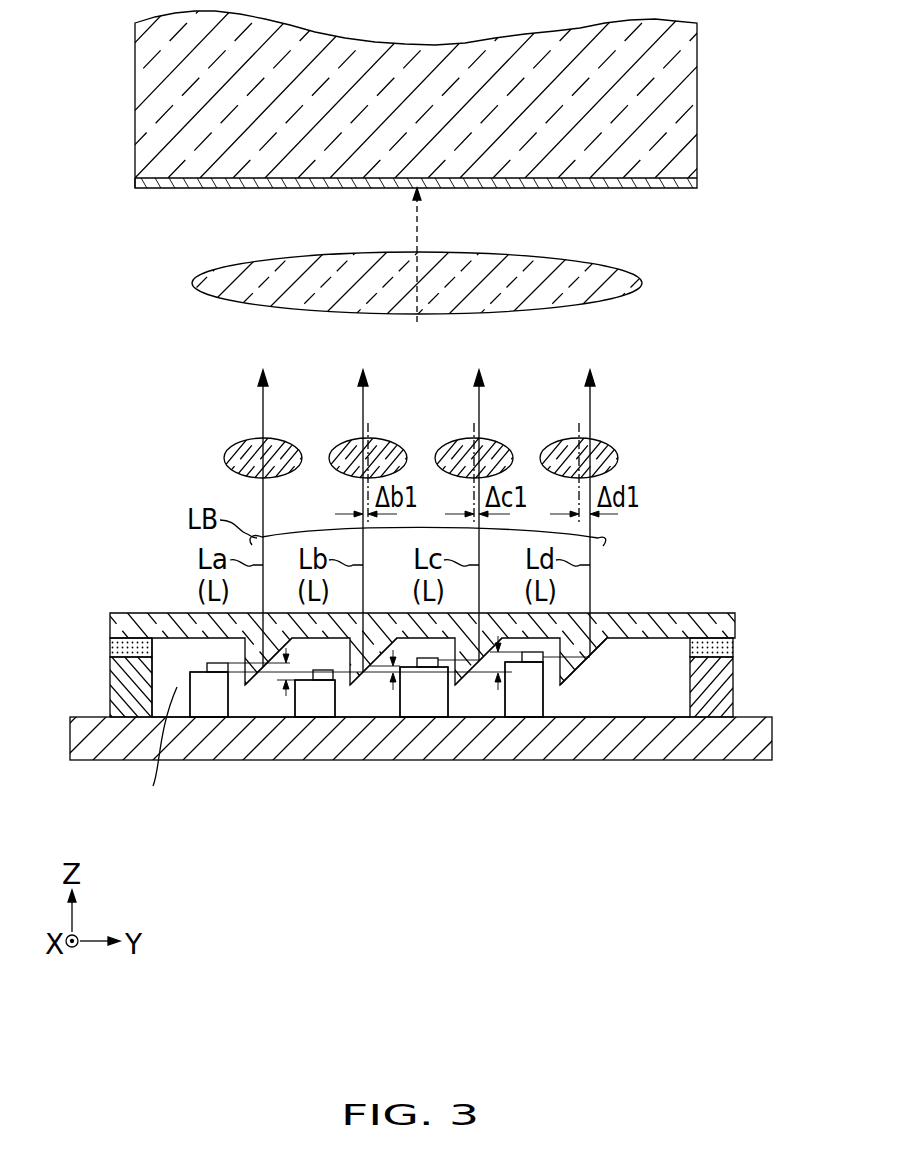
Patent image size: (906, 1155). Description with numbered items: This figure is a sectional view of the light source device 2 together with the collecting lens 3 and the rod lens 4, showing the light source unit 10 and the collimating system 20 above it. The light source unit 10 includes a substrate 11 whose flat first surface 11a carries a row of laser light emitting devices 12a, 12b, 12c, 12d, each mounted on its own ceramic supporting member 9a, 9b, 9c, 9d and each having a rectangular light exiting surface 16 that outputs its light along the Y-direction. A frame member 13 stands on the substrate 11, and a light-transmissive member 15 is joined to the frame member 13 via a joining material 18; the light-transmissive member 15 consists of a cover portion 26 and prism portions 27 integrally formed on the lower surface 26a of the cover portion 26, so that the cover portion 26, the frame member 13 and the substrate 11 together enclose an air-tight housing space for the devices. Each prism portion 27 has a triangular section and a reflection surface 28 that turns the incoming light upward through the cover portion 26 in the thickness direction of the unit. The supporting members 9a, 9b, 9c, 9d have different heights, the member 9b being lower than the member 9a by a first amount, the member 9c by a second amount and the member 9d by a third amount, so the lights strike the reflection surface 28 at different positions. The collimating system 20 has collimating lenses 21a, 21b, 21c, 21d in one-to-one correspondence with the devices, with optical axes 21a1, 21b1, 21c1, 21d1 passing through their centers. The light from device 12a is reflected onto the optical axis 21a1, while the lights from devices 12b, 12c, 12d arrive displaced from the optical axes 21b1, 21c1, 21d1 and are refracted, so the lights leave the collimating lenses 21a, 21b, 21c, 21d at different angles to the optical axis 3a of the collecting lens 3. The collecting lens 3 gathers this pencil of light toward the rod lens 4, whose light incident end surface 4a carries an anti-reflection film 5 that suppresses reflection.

The light source device 2 is at (776, 400).
The collecting lens 3 is at (618, 270).
The optical axis of the collecting lens 3a is at (418, 234).
The rod lens 4 is at (683, 72).
The light incident end surface 4a is at (665, 184).
The anti-reflection film 5 is at (135, 184).
The supporting member 9a is at (217, 703).
The supporting member 9b is at (322, 708).
The supporting member 9c is at (427, 700).
The supporting member 9d is at (535, 703).
The light source unit 10 is at (148, 572).
The substrate 11 is at (723, 748).
The first surface 11a is at (653, 717).
The light emitting device 12a is at (213, 670).
The light emitting device 12b is at (318, 682).
The light emitting device 12c is at (423, 668).
The light emitting device 12d is at (533, 663).
The frame member 13 is at (110, 697).
The light-transmissive member 15 is at (437, 609).
The light exiting surface 16 is at (233, 670).
The joining material 18 is at (110, 642).
The collimating system 20 is at (461, 423).
The collimating lens 21a is at (238, 445).
The collimating lens 21b is at (343, 445).
The collimating lens 21c is at (448, 445).
The collimating lens 21d is at (553, 445).
The optical axis 21a1 is at (268, 437).
The optical axis 21b1 is at (373, 437).
The optical axis 21c1 is at (474, 437).
The optical axis 21d1 is at (579, 437).
The cover portion 26 is at (623, 613).
The lower surface 26a is at (172, 638).
The prism portion 27 is at (600, 643).
The reflection surface 28 is at (578, 665).